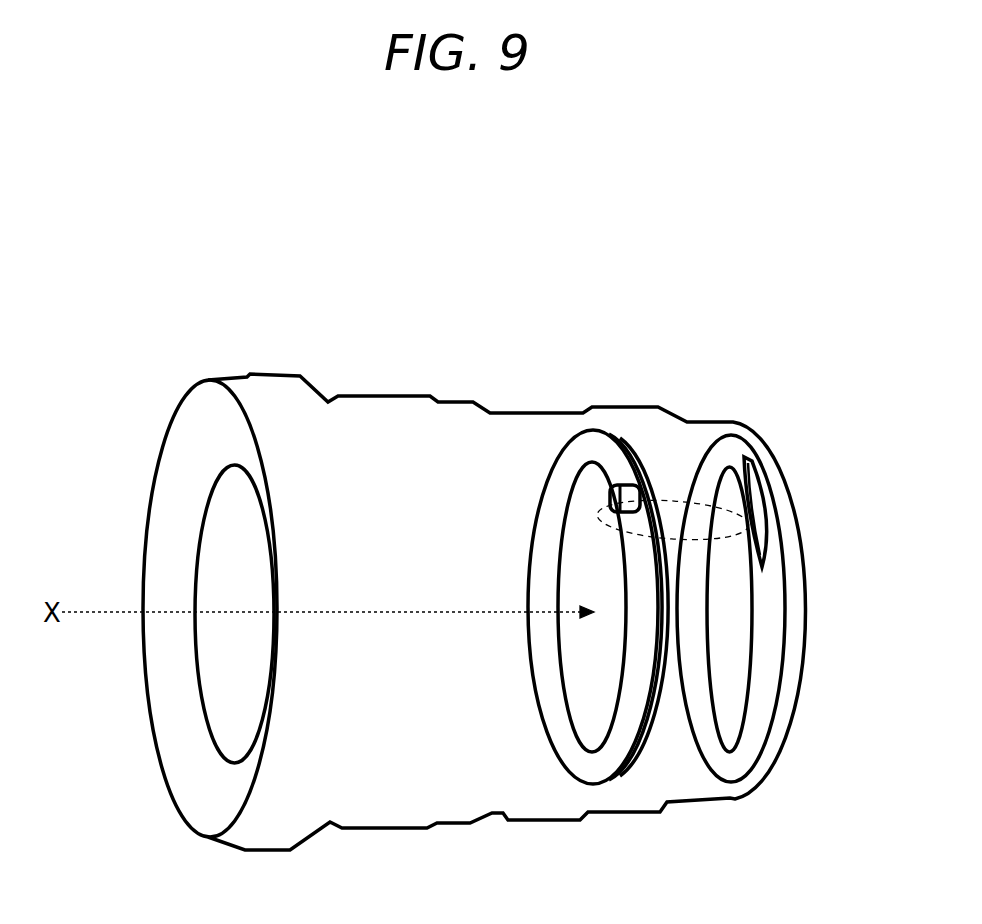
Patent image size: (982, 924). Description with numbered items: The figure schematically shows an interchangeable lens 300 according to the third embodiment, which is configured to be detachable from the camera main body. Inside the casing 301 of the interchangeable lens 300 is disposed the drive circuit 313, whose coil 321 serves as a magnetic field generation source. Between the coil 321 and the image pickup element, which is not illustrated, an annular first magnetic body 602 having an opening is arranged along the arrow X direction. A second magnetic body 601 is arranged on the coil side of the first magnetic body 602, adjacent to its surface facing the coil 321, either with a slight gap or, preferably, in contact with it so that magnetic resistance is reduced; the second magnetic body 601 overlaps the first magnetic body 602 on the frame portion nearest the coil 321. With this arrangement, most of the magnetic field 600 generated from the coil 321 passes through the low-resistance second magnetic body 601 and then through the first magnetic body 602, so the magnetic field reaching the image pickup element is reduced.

The interchangeable lens 300 is at (168, 313).
The casing 301 is at (380, 830).
The drive circuit 313 is at (575, 437).
The coil 321 is at (634, 452).
The magnetic field 600 is at (672, 508).
The second magnetic body 601 is at (756, 492).
The first magnetic body 602 is at (785, 567).